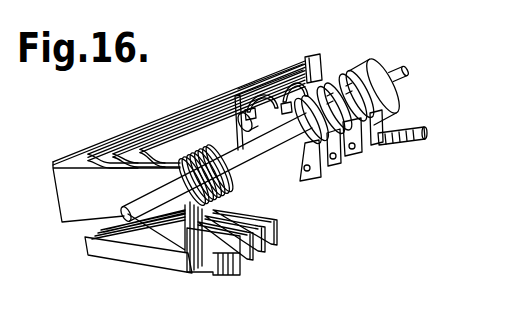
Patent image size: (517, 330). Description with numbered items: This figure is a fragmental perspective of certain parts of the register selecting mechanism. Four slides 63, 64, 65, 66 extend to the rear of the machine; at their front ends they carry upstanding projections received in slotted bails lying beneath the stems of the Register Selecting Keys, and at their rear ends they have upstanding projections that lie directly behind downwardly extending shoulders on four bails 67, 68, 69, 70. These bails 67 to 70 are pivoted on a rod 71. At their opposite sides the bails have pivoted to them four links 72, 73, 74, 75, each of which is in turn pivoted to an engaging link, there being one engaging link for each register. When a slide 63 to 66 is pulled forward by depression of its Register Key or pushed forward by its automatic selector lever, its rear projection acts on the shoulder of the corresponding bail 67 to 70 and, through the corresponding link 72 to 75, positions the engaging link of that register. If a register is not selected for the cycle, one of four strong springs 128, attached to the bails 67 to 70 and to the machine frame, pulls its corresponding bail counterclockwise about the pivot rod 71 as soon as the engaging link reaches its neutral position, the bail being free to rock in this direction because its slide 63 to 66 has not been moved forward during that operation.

The slide 63 is at (233, 250).
The slide 64 is at (247, 248).
The slide 65 is at (263, 245).
The slide 66 is at (277, 238).
The bail 67 is at (51, 168).
The bail 68 is at (88, 156).
The bail 69 is at (111, 150).
The bail 70 is at (138, 143).
The rod 71 is at (238, 152).
The link 72 is at (232, 96).
The link 73 is at (262, 94).
The link 74 is at (295, 82).
The link 75 is at (312, 56).
The spring 128 is at (404, 142).